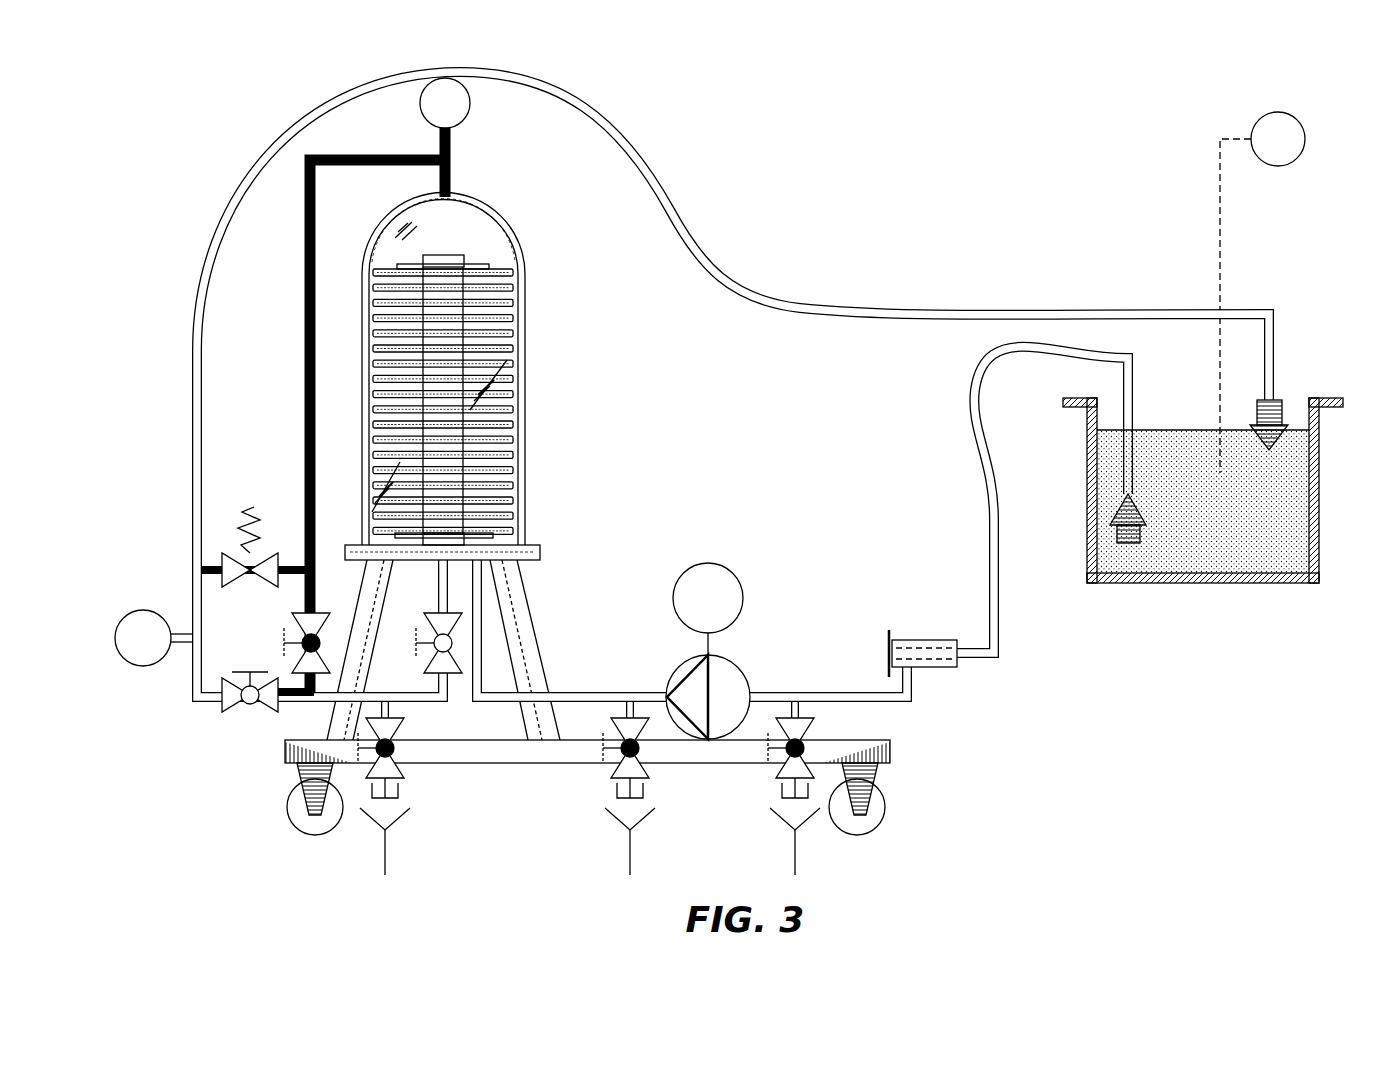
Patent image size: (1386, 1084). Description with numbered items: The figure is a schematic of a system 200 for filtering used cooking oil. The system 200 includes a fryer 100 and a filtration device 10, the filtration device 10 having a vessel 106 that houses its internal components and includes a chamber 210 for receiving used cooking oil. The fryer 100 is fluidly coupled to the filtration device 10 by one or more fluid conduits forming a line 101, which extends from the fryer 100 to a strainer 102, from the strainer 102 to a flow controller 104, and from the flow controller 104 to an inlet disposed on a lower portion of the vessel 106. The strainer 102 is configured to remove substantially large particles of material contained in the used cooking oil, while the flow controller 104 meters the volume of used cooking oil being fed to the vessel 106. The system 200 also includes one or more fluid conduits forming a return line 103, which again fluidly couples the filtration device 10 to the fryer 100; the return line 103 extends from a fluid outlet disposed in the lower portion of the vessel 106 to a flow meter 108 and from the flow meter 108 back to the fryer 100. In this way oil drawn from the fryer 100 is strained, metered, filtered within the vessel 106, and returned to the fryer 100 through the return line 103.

The system 200 is at (182, 271).
The return line 103 is at (647, 152).
The line 101 is at (968, 383).
The strainer 102 is at (950, 668).
The flow controller 104 is at (670, 670).
The flow meter 108 is at (139, 666).
The vessel 106 is at (527, 323).
The chamber 210 is at (486, 248).
The filtration device 10 is at (534, 397).
The fryer 100 is at (1320, 480).